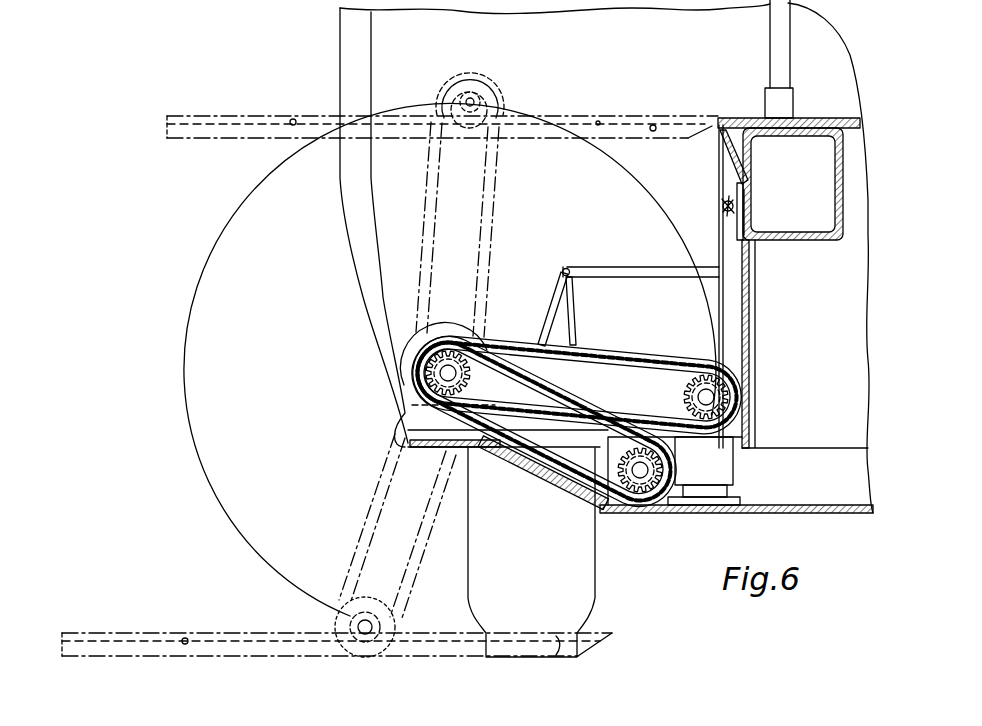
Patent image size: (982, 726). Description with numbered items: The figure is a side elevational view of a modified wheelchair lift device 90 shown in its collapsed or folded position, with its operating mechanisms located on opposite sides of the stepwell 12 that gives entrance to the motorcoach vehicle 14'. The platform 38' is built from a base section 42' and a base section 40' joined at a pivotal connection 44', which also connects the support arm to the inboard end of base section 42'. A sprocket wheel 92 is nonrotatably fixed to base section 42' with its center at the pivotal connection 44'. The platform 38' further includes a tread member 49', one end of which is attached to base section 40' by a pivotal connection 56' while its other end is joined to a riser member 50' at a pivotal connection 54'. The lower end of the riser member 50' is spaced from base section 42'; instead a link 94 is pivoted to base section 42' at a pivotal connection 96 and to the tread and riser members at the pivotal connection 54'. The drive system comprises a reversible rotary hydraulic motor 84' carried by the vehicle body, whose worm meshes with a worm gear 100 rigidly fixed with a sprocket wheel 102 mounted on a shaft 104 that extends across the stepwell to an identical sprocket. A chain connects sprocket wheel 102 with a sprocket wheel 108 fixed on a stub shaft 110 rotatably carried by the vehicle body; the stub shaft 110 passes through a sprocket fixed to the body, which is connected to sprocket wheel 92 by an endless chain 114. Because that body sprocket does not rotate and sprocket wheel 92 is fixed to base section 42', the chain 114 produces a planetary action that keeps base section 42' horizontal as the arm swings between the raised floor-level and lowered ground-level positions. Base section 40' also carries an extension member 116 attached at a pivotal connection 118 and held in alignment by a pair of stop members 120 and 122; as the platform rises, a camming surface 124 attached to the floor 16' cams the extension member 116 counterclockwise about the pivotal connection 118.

The stepwell 12 is at (393, 300).
The motorcoach vehicle 14' is at (442, 91).
The floor 16' is at (795, 256).
The platform 38' is at (482, 205).
The base section 40' is at (799, 344).
The base section 42' is at (543, 479).
The pivotal connection 44' is at (750, 382).
The tread member 49' is at (641, 241).
The riser member 50' is at (600, 311).
The pivotal connection 54' is at (581, 234).
The pivotal connection 56' is at (759, 286).
The reversible rotary hydraulic motor 84' is at (733, 471).
The wheelchair lift device 90 is at (416, 272).
The sprocket wheel 92 is at (742, 412).
The link 94 is at (552, 313).
The pivotal connection 96 is at (518, 417).
The worm gear 100 is at (597, 503).
The sprocket wheel 102 is at (633, 480).
The shaft 104 is at (641, 462).
The sprocket wheel 108 is at (427, 357).
The stub shaft 110 is at (447, 373).
The endless chain 114 is at (622, 354).
The extension member 116 is at (728, 186).
The pivotal connection 118 is at (722, 205).
The stop member 120 is at (745, 218).
The stop member 122 is at (740, 203).
The camming surface 124 is at (722, 155).